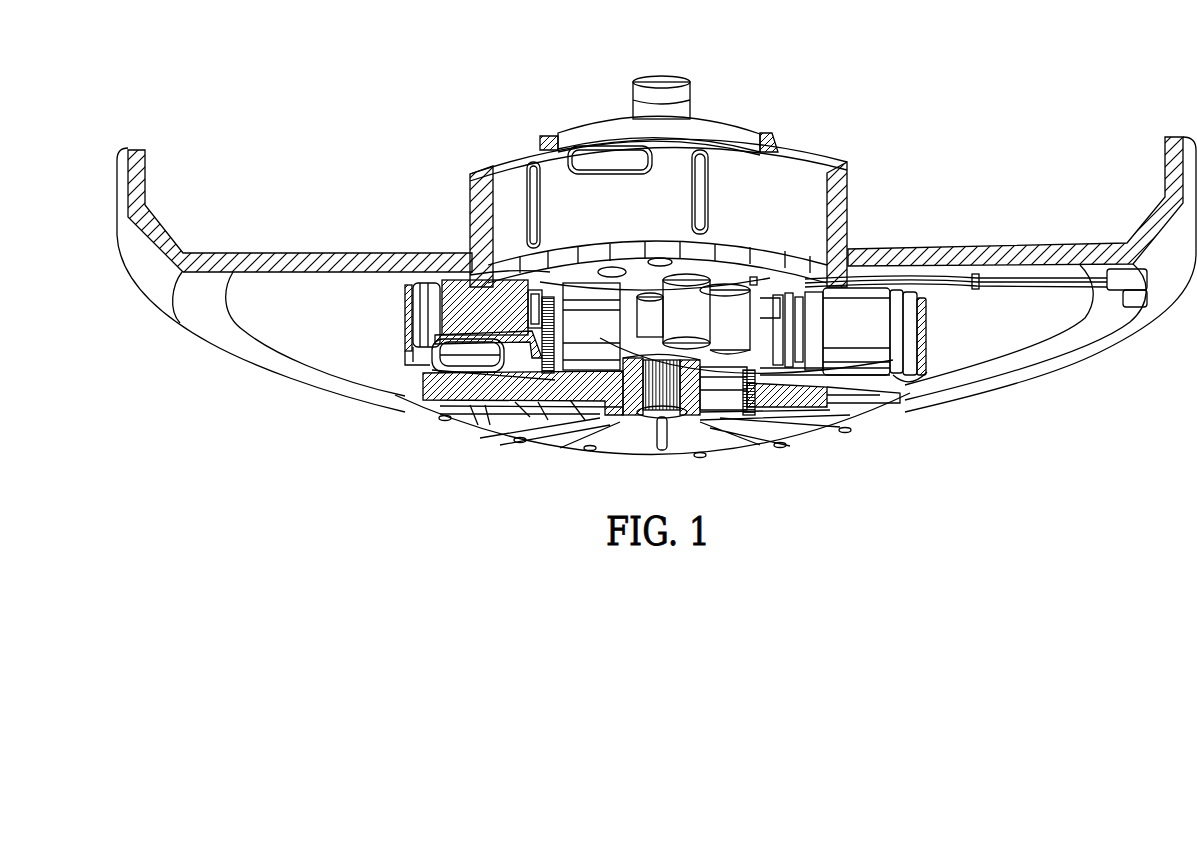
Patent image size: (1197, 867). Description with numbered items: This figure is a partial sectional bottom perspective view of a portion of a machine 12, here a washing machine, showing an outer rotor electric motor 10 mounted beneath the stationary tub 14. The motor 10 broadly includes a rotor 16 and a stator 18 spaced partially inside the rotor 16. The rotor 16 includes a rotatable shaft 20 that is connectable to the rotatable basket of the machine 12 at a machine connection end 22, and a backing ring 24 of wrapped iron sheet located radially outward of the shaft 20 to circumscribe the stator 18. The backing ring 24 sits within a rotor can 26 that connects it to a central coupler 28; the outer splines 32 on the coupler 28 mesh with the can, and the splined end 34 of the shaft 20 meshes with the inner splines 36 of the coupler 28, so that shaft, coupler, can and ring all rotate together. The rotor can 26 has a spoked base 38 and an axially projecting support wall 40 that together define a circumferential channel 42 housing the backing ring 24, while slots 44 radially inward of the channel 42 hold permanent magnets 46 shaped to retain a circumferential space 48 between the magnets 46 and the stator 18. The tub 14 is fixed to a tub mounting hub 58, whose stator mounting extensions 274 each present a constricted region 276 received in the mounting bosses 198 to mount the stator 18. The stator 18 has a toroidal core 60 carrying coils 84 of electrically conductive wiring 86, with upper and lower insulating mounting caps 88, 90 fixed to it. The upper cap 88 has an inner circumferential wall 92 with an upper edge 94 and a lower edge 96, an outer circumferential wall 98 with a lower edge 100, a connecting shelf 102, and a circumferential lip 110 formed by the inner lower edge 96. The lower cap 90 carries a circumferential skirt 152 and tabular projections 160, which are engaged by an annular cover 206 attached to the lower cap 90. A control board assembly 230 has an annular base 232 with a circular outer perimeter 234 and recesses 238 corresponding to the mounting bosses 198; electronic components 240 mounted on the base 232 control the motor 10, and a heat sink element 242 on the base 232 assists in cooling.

The electric motor 10 is at (862, 482).
The machine 12 is at (970, 75).
The stationary tub 14 is at (290, 338).
The rotor 16 is at (470, 415).
The stator 18 is at (450, 372).
The rotatable shaft 20 is at (640, 395).
The machine connection end 22 is at (668, 97).
The backing ring 24 is at (910, 355).
The rotor can 26 is at (738, 458).
The central coupler 28 is at (715, 415).
The outer splines 32 is at (660, 405).
The splined end 34 is at (665, 395).
The inner splines 36 is at (688, 395).
The spoked base 38 is at (815, 425).
The support wall 40 is at (923, 335).
The channel 42 is at (402, 366).
The slots 44 is at (415, 370).
The permanent magnets 46 is at (407, 307).
The circumferential space 48 is at (421, 320).
The tub mounting hub 58 is at (731, 178).
The core 60 is at (438, 357).
The coils 84 is at (862, 315).
The wiring 86 is at (1027, 283).
The upper insulating mounting cap 88 is at (760, 337).
The lower insulating mounting cap 90 is at (790, 420).
The inner circumferential wall 92 is at (541, 278).
The upper edge 94 is at (530, 278).
The lower edge 96 is at (565, 326).
The outer circumferential wall 98 is at (508, 318).
The lower edge 100 is at (436, 280).
The shelf 102 is at (505, 300).
The circumferential lip 110 is at (473, 420).
The circumferential skirt 152 is at (542, 405).
The tabular projections 160 is at (485, 420).
The mounting bosses 198 is at (760, 420).
The cover 206 is at (522, 410).
The control board assembly 230 is at (770, 287).
The base 232 is at (687, 272).
The outer perimeter 234 is at (660, 258).
The recesses 238 is at (584, 262).
The electronic components 240 is at (712, 290).
The heat sink element 242 is at (575, 400).
The stator mounting extensions 274 is at (623, 253).
The constricted region 276 is at (608, 262).